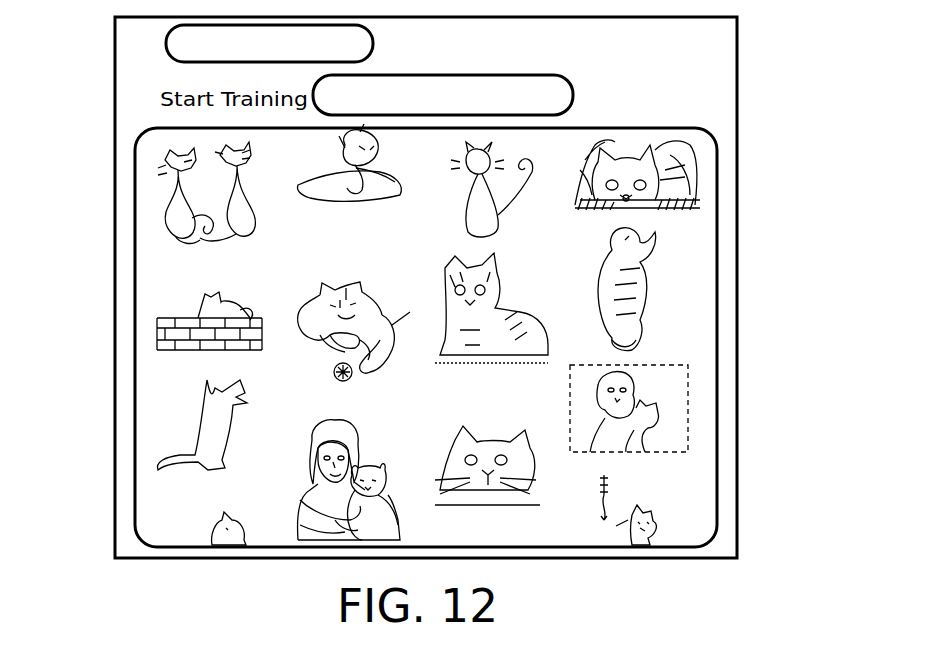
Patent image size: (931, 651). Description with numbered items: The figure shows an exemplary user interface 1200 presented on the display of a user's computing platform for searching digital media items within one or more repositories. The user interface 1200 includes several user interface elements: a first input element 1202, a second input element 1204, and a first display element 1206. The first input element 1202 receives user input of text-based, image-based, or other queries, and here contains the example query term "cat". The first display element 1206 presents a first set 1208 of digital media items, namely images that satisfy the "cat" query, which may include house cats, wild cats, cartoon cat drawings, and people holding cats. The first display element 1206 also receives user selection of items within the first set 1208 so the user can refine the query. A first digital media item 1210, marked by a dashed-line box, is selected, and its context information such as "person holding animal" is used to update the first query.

The user interface 1200 is at (737, 85).
The first input element 1202 is at (166, 52).
The second input element 1204 is at (452, 73).
The first display element 1206 is at (717, 258).
The first set of digital media items 1208 is at (160, 289).
The first digital media item 1210 is at (688, 382).